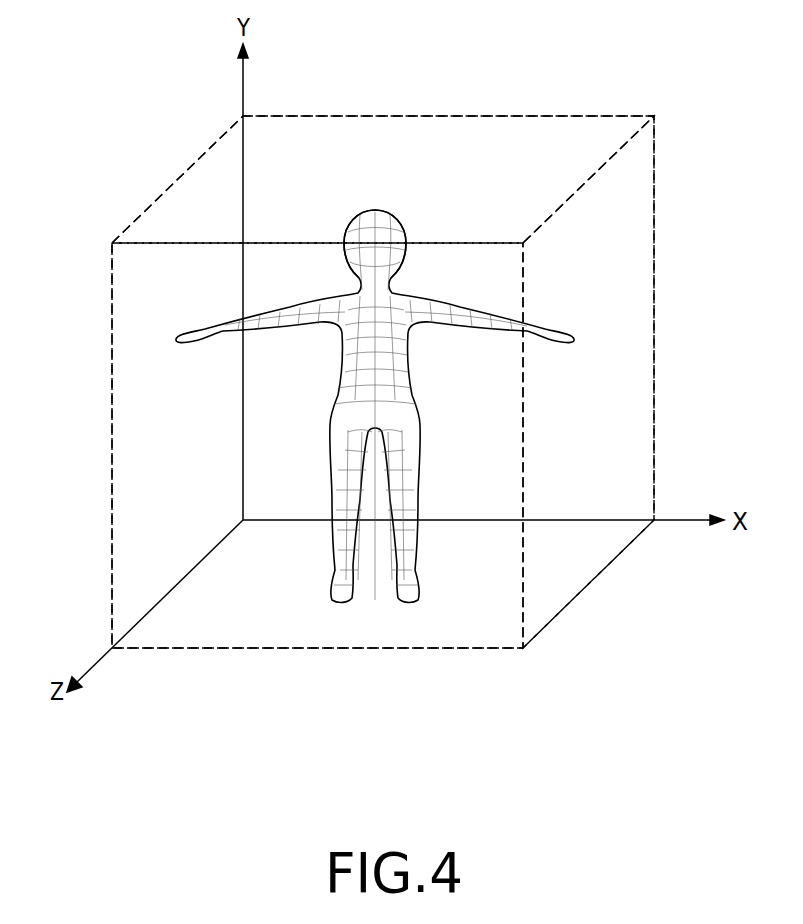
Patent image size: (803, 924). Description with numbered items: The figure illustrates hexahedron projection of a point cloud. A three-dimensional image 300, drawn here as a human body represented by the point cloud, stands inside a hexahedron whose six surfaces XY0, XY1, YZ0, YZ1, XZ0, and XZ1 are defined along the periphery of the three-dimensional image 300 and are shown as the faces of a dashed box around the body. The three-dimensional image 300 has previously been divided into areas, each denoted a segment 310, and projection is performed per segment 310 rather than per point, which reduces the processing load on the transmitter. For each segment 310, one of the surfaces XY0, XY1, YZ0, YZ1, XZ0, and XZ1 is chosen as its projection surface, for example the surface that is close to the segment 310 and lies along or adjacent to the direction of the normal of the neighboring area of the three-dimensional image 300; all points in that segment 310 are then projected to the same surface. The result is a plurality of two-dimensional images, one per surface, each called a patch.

The 3D image 300 is at (411, 208).
The segment 310 is at (373, 208).
The surface XY0 is at (597, 142).
The surface XY1 is at (202, 610).
The surface XZ0 is at (372, 615).
The surface XZ1 is at (482, 145).
The surface YZ0 is at (155, 417).
The surface YZ1 is at (612, 307).